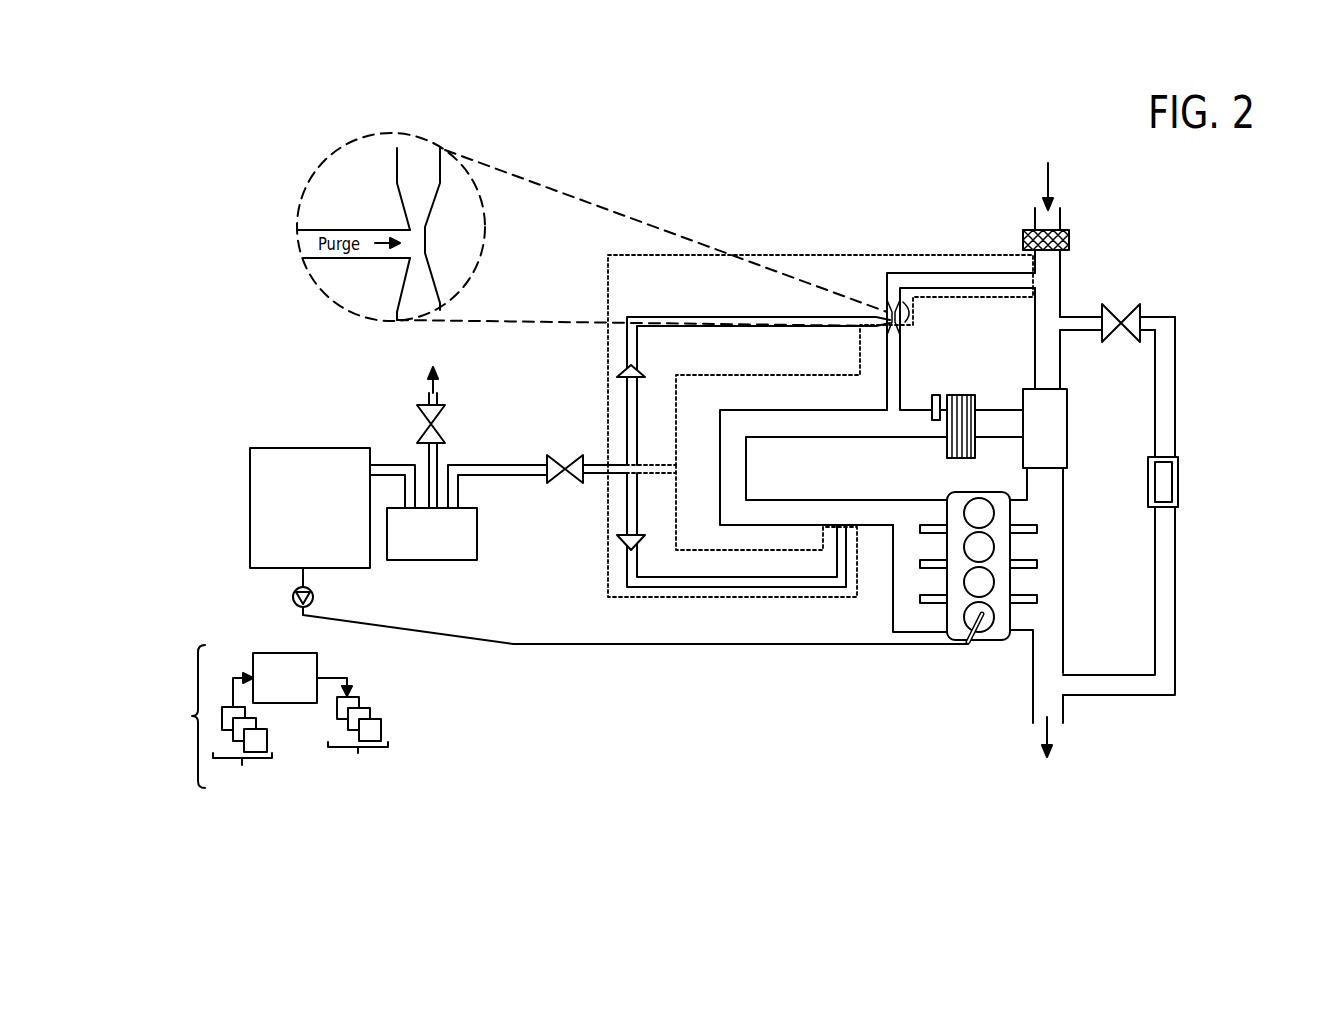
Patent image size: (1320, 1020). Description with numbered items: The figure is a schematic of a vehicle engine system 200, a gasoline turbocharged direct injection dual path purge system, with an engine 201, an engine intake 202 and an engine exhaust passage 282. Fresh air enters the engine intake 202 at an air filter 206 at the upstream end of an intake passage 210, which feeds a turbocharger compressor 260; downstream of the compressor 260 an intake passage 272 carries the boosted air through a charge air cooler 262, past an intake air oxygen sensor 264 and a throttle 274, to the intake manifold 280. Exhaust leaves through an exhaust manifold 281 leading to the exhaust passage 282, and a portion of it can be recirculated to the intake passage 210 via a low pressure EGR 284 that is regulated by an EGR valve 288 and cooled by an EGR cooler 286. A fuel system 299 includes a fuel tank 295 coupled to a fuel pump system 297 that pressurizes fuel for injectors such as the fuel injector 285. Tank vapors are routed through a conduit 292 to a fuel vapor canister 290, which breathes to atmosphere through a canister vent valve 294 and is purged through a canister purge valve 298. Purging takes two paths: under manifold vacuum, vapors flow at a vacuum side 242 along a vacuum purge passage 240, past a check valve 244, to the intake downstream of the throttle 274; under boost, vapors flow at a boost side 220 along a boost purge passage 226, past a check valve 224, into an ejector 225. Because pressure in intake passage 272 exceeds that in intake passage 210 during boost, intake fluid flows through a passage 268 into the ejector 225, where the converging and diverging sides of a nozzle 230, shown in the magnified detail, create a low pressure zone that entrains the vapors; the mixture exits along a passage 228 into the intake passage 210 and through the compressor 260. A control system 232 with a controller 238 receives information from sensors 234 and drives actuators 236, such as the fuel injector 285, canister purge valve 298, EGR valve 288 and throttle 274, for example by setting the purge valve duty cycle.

The vehicle engine system 200 is at (828, 198).
The engine 201 is at (965, 497).
The engine intake 202 is at (1062, 217).
The air filter 206 is at (1069, 240).
The intake passage 210 is at (1062, 367).
The boost side 220 is at (838, 256).
The check valve 224 is at (640, 369).
The ejector 225 is at (442, 240).
The boost purge passage 226 is at (678, 318).
The passage 228 is at (935, 275).
The nozzle 230 is at (416, 243).
The control system 232 is at (192, 716).
The sensors 234 is at (242, 749).
The actuators 236 is at (358, 737).
The controller 238 is at (292, 680).
The vacuum purge passage 240 is at (773, 592).
The vacuum side 242 is at (698, 600).
The check valve 244 is at (641, 547).
The compressor 260 is at (1067, 437).
The charge air cooler 262 is at (964, 395).
The intake air oxygen sensor 264 is at (935, 393).
The passage 268 is at (900, 357).
The intake passage 272 is at (828, 437).
The throttle 274 is at (771, 522).
The intake manifold 280 is at (906, 604).
The exhaust manifold 281 is at (1050, 568).
The exhaust passage 282 is at (1065, 660).
The low pressure EGR 284 is at (1176, 638).
The fuel injector 285 is at (972, 642).
The EGR cooler 286 is at (1179, 473).
The EGR valve 288 is at (1110, 312).
The fuel vapor canister 290 is at (441, 546).
The conduit 292 is at (411, 459).
The canister vent valve 294 is at (420, 414).
The fuel tank 295 is at (321, 516).
The fuel pump system 297 is at (316, 596).
The canister purge valve 298 is at (577, 456).
The fuel system 299 is at (314, 415).